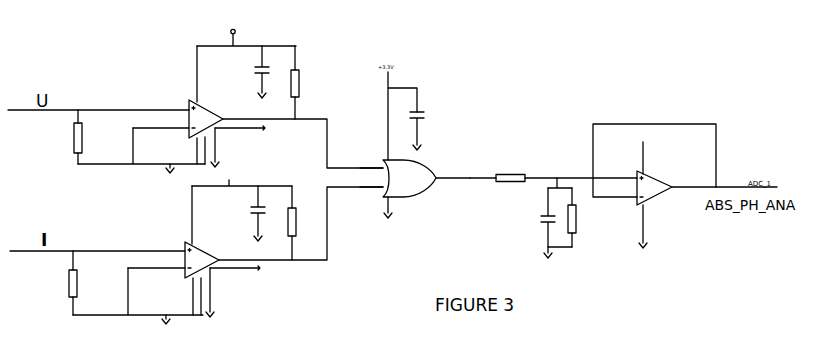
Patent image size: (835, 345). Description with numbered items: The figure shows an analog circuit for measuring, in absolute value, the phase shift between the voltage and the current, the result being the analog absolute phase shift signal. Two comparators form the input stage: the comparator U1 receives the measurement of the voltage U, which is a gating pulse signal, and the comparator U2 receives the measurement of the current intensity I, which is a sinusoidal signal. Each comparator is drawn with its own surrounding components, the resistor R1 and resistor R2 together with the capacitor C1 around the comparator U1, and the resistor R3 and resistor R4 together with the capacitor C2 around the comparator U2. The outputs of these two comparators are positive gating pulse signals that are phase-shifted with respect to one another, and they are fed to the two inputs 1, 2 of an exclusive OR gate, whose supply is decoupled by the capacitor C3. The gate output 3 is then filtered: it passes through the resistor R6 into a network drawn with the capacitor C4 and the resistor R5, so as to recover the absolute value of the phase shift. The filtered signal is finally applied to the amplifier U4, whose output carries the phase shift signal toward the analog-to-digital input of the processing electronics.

The comparator U1 is at (195, 101).
The comparator U2 is at (196, 248).
The output buffer operational amplifier U4 is at (685, 186).
The resistor R1 is at (83, 137).
The resistor R2 is at (299, 82).
The resistor R3 is at (78, 283).
The resistor R4 is at (296, 223).
The resistor R5 is at (576, 217).
The resistor R6 is at (553, 184).
The capacitor C1 is at (266, 72).
The capacitor C2 is at (262, 213).
The capacitor C3 is at (421, 127).
The capacitor C4 is at (543, 217).
The OR gate input 1 is at (371, 169).
The OR gate input 2 is at (371, 186).
The OR gate output 3 is at (453, 173).